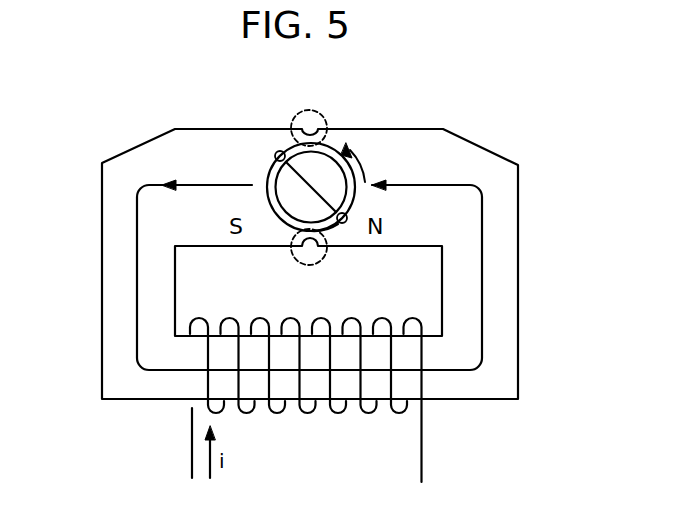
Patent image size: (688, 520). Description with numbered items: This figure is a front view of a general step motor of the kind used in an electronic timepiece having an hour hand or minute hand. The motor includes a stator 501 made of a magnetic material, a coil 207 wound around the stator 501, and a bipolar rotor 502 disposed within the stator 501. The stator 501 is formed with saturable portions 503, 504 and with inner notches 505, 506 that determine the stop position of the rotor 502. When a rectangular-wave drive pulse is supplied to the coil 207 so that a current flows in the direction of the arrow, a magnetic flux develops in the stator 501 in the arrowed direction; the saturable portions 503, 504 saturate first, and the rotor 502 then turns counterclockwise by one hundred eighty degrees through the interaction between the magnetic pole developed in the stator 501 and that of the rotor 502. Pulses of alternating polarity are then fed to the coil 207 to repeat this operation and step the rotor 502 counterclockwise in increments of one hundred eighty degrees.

The stator 501 is at (128, 160).
The bipolar rotor 502 is at (278, 171).
The saturable portion 503 is at (316, 111).
The saturable portion 504 is at (301, 263).
The inner notch 505 is at (277, 157).
The inner notch 506 is at (340, 222).
The coil 207 is at (191, 426).